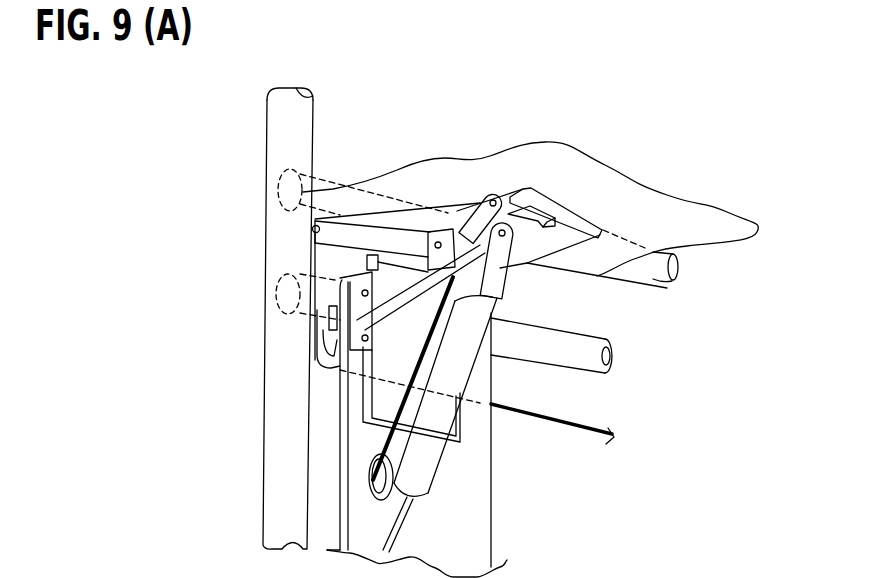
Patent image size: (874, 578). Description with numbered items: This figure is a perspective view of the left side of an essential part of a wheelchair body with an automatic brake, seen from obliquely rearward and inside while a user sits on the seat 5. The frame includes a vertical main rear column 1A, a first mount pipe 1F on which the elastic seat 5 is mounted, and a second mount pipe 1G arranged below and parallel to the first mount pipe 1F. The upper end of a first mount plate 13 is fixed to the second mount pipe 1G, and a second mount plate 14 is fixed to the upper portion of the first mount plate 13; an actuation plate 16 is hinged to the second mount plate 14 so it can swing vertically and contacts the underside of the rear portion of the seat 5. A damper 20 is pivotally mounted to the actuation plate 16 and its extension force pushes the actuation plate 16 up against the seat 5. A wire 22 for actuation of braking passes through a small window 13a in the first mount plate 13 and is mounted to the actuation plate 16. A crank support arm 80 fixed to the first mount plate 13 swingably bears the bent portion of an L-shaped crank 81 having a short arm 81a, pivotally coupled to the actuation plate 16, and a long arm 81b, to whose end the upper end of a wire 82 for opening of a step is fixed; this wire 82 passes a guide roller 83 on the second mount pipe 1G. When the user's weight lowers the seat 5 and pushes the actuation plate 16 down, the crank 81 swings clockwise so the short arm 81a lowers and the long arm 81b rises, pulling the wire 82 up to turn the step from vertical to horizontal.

The main rear column 1A is at (283, 98).
The first mount pipe 1F is at (683, 263).
The second mount pipe 1G is at (602, 360).
The seat 5 is at (643, 197).
The first mount plate 13 is at (467, 526).
The small window 13a is at (367, 467).
The second mount plate 14 is at (492, 444).
The actuation plate 16 is at (558, 237).
The damper 20 is at (440, 388).
The wire for actuation of braking 22 is at (488, 298).
The crank support arm 80 is at (412, 300).
The crank 81 is at (387, 242).
The short arm 81a is at (483, 213).
The long arm 81b is at (320, 226).
The wire for opening of a step 82 is at (595, 428).
The guide roller 83 is at (310, 347).